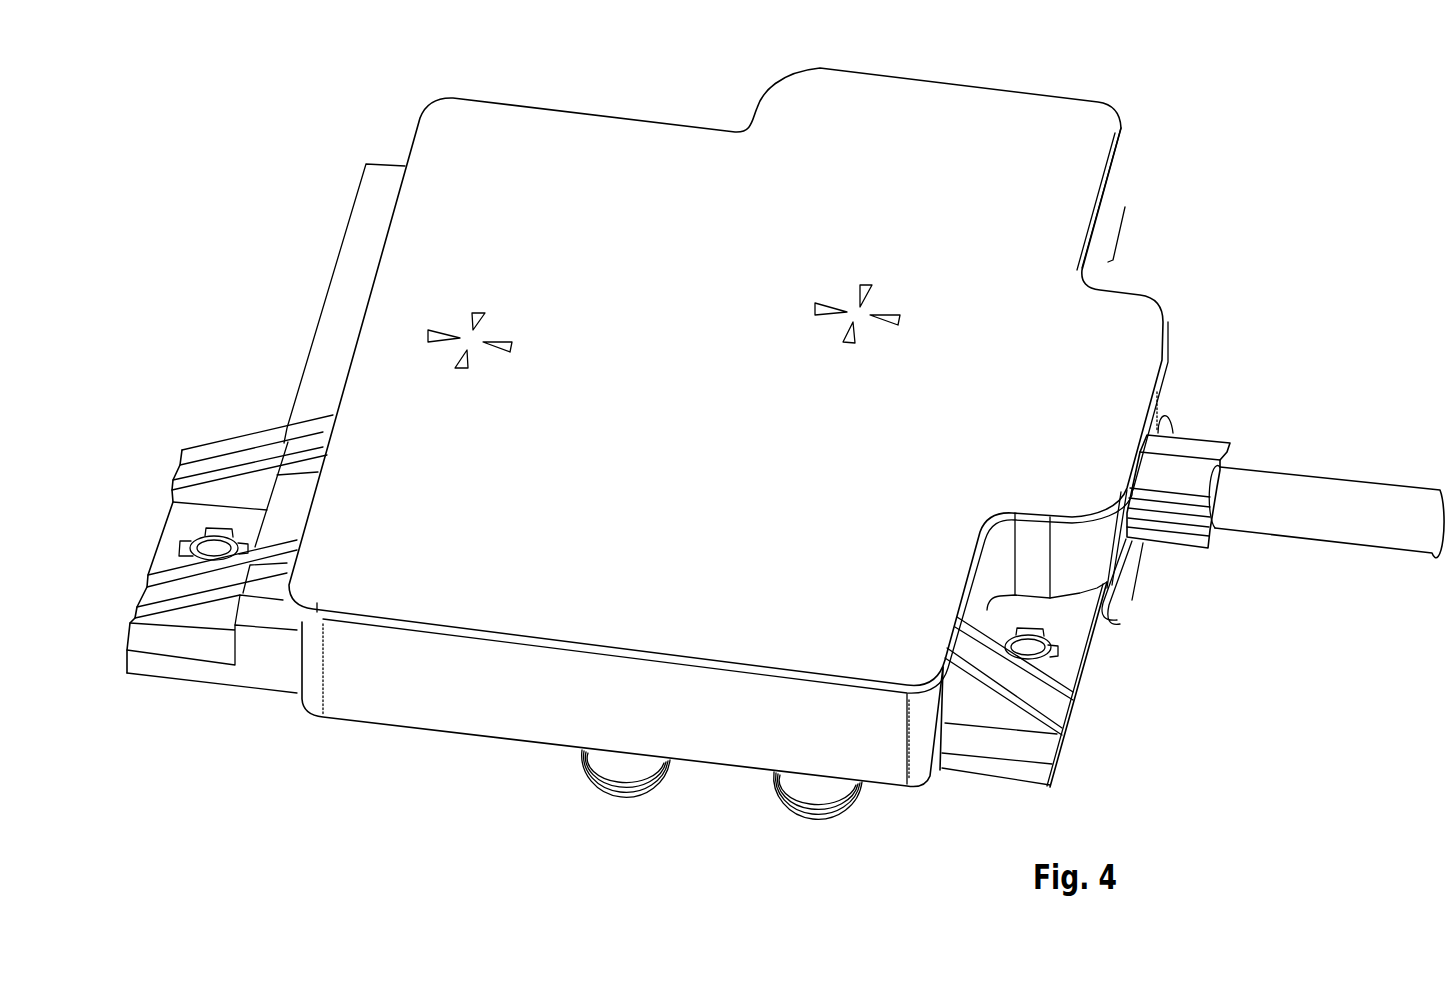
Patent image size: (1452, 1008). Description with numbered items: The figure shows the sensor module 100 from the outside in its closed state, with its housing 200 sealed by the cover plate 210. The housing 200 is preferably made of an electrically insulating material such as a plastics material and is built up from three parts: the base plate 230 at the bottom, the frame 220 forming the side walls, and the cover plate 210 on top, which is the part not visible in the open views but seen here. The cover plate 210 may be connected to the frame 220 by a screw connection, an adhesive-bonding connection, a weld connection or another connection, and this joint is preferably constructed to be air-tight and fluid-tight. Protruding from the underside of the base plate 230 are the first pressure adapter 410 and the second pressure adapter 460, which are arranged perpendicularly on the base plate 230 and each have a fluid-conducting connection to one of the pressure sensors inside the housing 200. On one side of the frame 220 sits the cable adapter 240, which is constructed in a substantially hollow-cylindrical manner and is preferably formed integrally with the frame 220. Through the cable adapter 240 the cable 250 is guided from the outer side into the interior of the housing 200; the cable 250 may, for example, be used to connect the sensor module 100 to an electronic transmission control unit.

The sensor module 100 is at (278, 75).
The housing 200 is at (693, 427).
The cover plate 210 is at (1143, 323).
The frame 220 is at (427, 712).
The base plate 230 is at (1123, 610).
The cable adapter 240 is at (1193, 467).
The cable 250 is at (1353, 490).
The first pressure adapter 410 is at (593, 785).
The second pressure adapter 460 is at (795, 805).